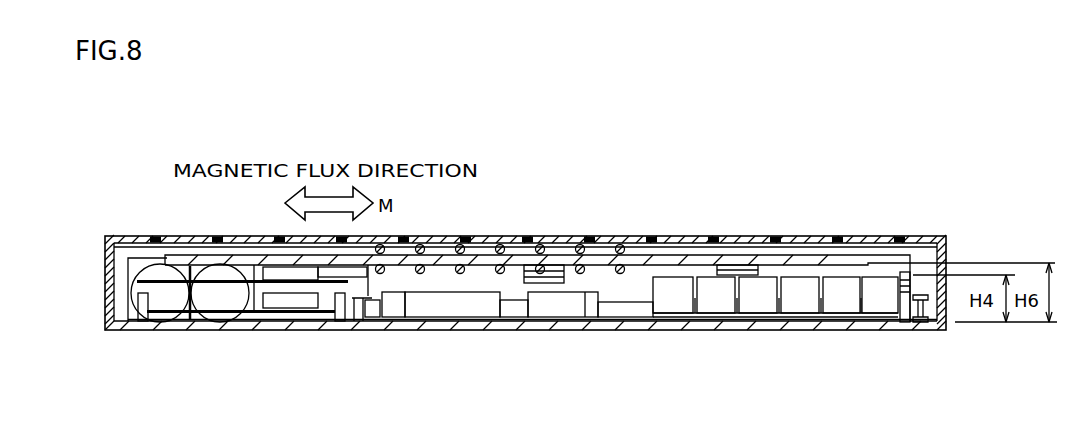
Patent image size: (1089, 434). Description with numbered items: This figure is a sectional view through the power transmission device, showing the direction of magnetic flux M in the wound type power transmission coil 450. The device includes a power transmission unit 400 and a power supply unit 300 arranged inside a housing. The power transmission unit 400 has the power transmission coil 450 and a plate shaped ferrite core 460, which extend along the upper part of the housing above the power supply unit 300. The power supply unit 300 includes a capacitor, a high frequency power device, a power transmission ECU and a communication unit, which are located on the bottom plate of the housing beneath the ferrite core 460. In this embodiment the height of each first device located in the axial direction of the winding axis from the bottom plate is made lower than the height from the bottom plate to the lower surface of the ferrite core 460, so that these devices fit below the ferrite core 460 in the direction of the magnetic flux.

The power supply unit 300 is at (630, 295).
The power transmission unit 400 is at (700, 188).
The power transmission coil 450 is at (622, 238).
The ferrite core 460 is at (683, 258).